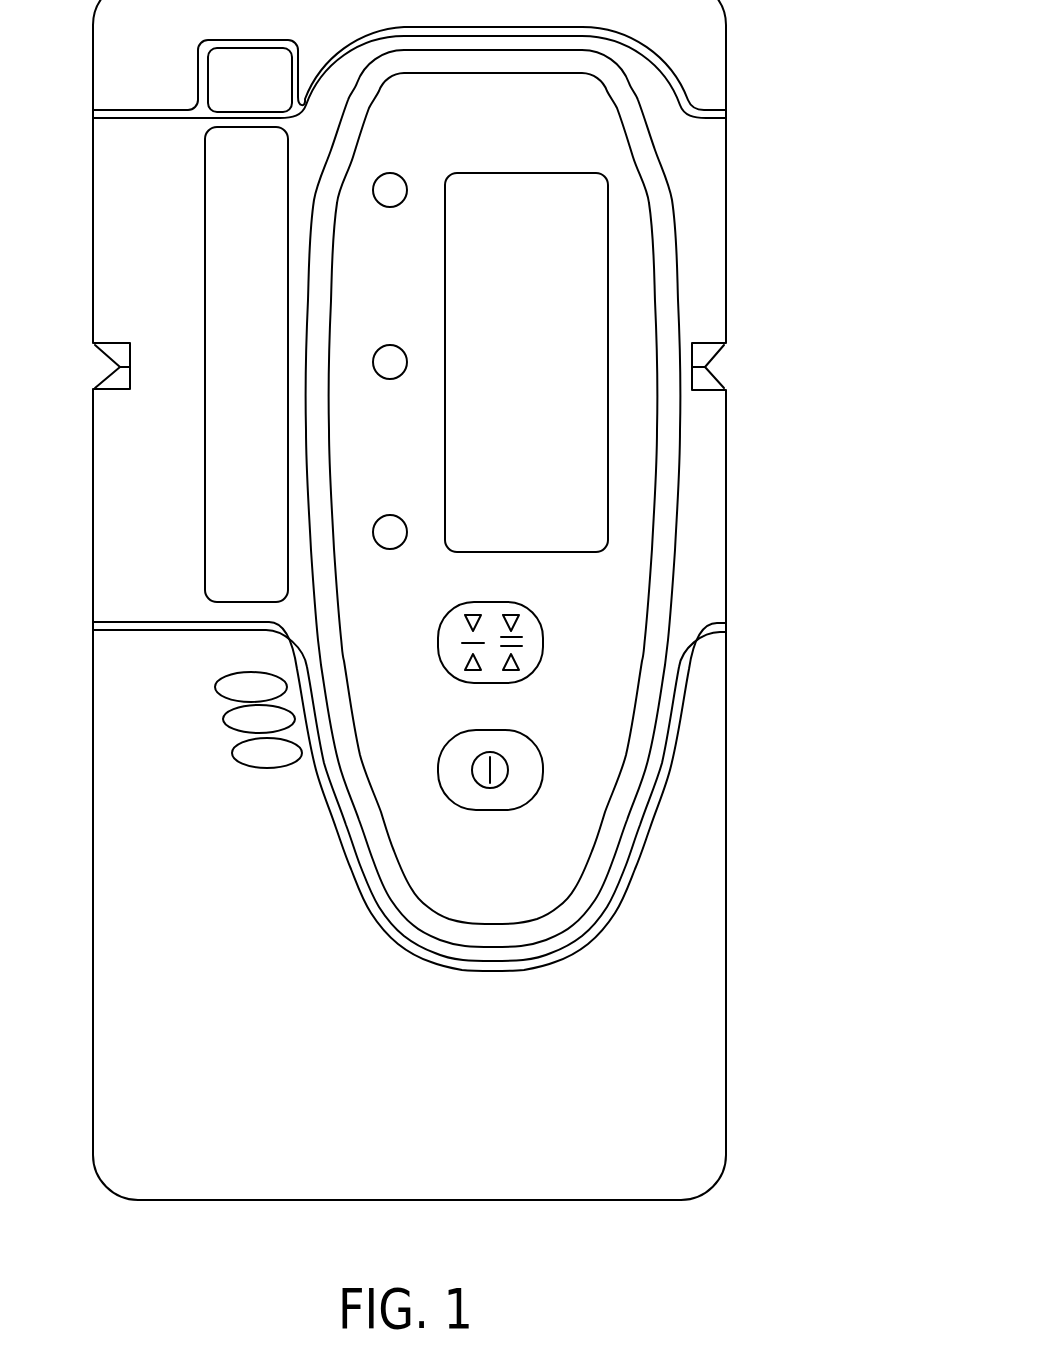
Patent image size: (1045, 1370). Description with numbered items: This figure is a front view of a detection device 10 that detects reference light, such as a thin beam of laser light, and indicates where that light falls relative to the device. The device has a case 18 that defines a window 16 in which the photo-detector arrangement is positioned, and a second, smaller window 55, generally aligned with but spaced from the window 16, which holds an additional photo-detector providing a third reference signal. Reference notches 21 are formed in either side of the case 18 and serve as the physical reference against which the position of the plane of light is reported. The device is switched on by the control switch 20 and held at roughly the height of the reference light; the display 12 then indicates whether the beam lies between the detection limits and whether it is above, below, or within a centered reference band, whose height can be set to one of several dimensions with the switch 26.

The detection device 10 is at (768, 133).
The display 12 is at (455, 287).
The window 16 is at (212, 512).
The case 18 is at (715, 572).
The control switch 20 is at (445, 752).
The reference notches 21 is at (112, 372).
The switch 26 is at (543, 657).
The window 55 is at (227, 85).